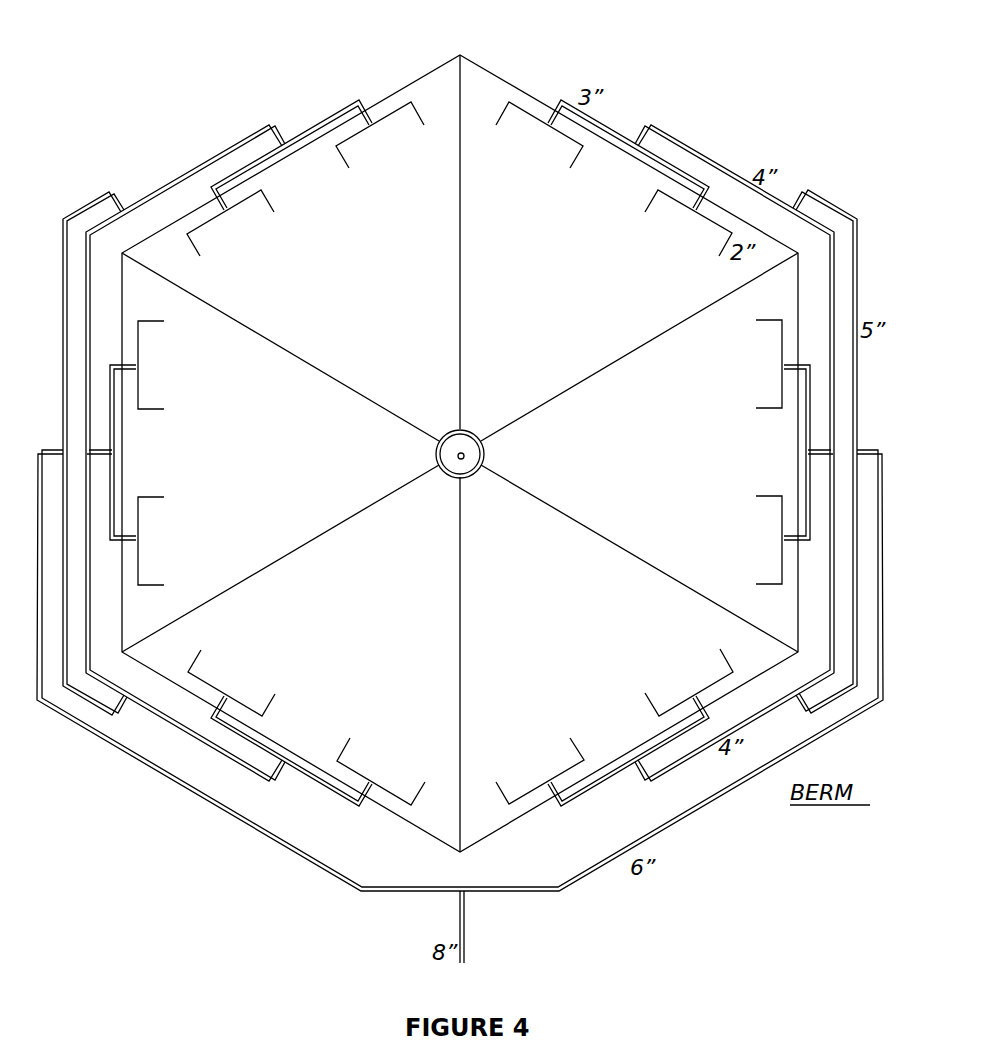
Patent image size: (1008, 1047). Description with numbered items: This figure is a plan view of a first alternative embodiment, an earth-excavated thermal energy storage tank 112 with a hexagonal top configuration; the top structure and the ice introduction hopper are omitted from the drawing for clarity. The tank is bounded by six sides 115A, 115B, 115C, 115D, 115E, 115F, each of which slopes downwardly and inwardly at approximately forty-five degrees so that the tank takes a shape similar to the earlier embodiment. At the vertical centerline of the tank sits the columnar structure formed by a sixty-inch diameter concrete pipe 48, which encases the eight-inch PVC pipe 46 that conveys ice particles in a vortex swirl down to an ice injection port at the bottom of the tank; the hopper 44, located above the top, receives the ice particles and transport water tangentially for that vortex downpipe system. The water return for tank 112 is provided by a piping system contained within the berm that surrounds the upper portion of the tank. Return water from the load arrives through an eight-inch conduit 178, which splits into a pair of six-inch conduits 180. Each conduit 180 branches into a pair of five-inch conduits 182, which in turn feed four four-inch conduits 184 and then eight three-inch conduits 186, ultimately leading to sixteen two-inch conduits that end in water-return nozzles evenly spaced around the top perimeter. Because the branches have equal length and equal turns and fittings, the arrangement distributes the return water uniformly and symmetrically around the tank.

The thermal energy storage tank 112 is at (435, 70).
The side 115A is at (300, 468).
The side 115B is at (393, 295).
The side 115C is at (590, 295).
The side 115D is at (692, 468).
The side 115E is at (591, 643).
The side 115F is at (398, 643).
The three-inch conduit 186 is at (604, 124).
The four-inch conduit 184 is at (685, 140).
The five-inch conduit 182 is at (857, 237).
The six-inch conduit 180 is at (700, 819).
The eight-inch conduit 178 is at (468, 930).
The hopper 44 is at (450, 432).
The concrete pipe 48 is at (468, 434).
The pipe 46 is at (466, 457).